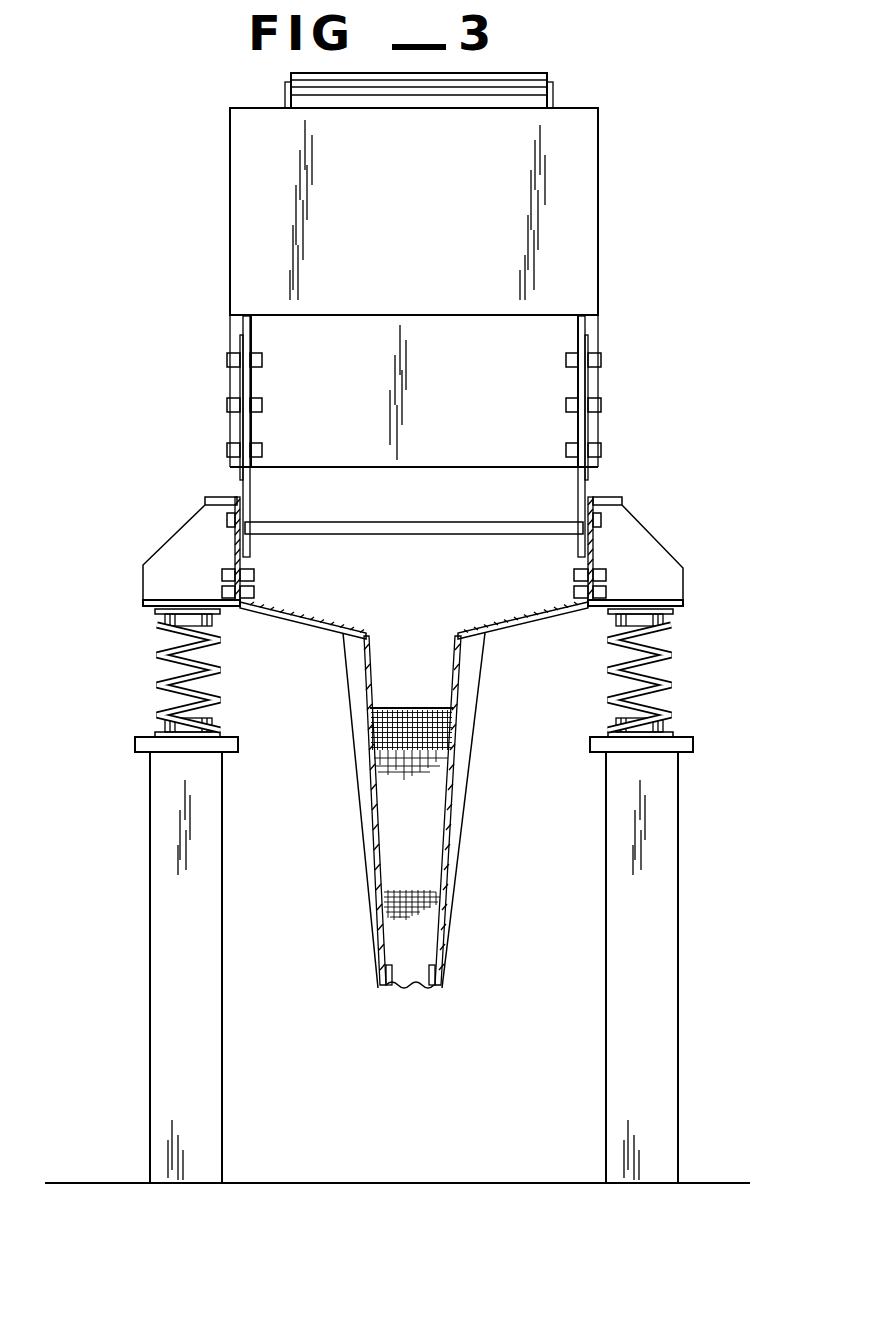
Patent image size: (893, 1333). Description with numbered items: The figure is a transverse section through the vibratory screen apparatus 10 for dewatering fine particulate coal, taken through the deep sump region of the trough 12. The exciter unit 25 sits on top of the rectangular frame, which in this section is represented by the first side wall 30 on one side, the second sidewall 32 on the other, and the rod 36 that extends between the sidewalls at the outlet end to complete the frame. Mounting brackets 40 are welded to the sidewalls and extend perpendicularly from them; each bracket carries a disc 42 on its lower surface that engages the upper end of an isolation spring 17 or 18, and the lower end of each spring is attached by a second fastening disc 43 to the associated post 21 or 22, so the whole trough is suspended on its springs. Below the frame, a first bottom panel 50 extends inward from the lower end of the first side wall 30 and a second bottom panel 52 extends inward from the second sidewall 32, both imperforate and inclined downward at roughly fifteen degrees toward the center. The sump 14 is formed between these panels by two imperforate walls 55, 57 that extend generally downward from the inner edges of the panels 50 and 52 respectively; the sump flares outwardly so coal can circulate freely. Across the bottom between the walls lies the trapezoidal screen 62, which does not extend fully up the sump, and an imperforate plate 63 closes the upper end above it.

The vibratory screen apparatus 10 is at (658, 177).
The exciter unit 25 is at (411, 194).
The trough 12 is at (600, 540).
The rod 36 is at (399, 522).
The second sidewall 32 is at (205, 500).
The first side wall 30 is at (596, 500).
The mounting bracket 40 is at (160, 600).
The disc 42 is at (158, 613).
The second fastening disc 43 is at (213, 724).
The isolation spring 18 is at (157, 688).
The isolation spring 17 is at (662, 690).
The post 22 is at (150, 888).
The post 21 is at (678, 888).
The second bottom panel 52 is at (320, 622).
The first bottom panel 50 is at (562, 620).
The imperforate wall 57 is at (378, 825).
The imperforate wall 55 is at (448, 825).
The imperforate plate 63 is at (440, 693).
The trapezoidal screen 62 is at (440, 770).
The sump 14 is at (376, 898).